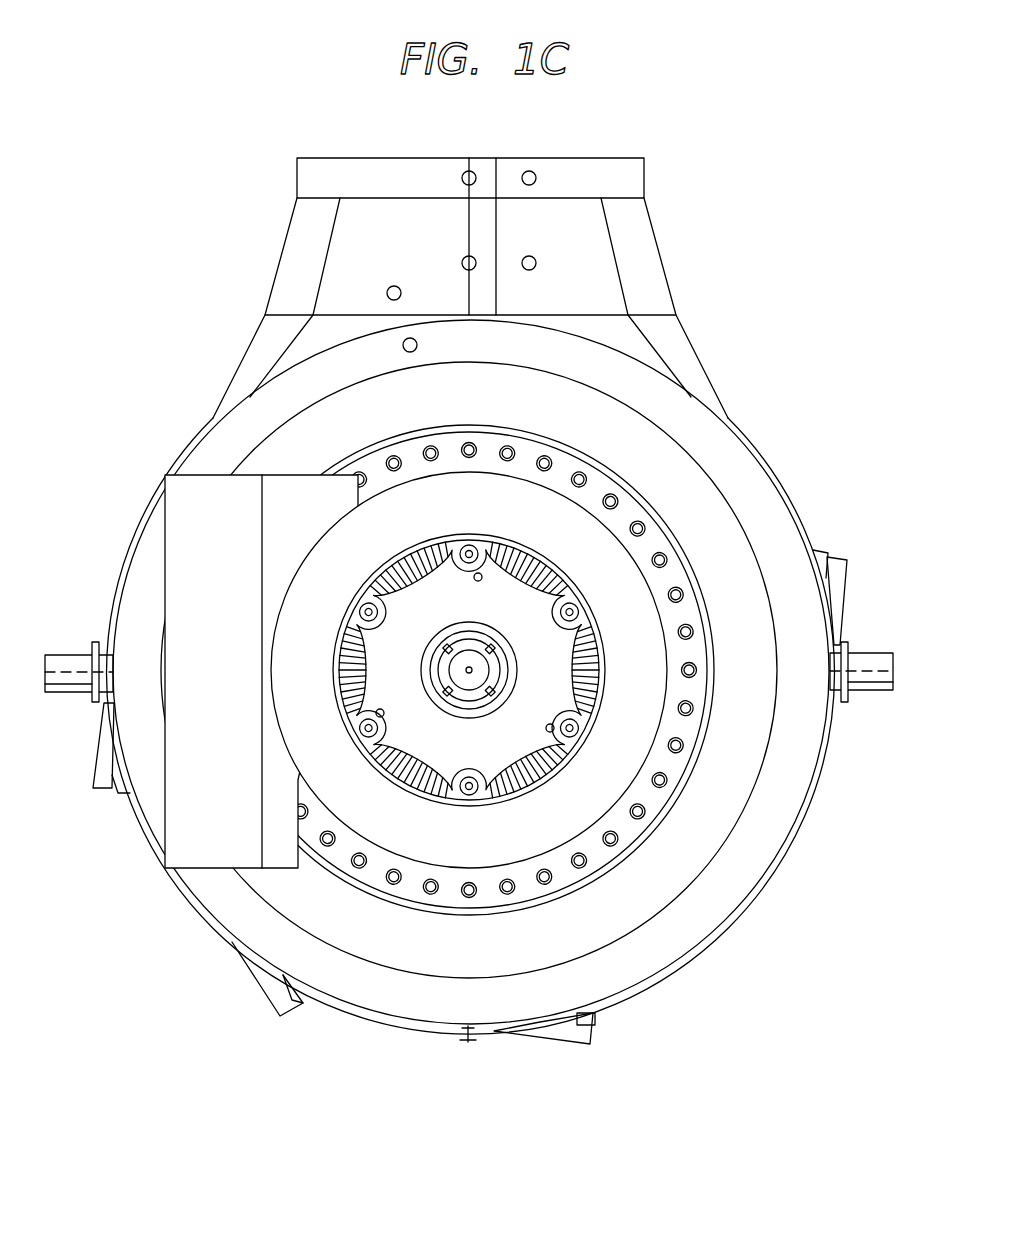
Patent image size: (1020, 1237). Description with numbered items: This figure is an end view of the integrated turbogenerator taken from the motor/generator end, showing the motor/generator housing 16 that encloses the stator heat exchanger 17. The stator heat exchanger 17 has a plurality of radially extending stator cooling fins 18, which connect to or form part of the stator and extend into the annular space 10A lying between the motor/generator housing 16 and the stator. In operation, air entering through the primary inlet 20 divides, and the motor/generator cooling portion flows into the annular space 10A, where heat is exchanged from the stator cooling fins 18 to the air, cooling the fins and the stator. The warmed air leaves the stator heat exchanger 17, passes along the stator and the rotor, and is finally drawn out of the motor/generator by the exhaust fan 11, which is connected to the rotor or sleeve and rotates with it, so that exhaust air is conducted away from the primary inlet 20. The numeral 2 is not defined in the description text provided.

The generator housing assembly 2 is at (612, 150).
The annular space 10A is at (598, 675).
The exhaust fan 11 is at (445, 697).
The motor/generator housing 16 is at (548, 780).
The stator heat exchanger 17 is at (600, 632).
The stator cooling fins 18 is at (553, 575).
The primary inlet 20 is at (470, 509).